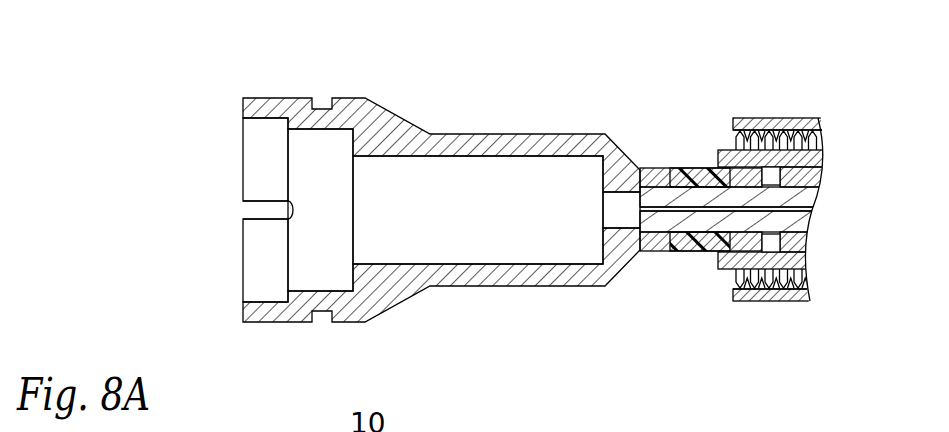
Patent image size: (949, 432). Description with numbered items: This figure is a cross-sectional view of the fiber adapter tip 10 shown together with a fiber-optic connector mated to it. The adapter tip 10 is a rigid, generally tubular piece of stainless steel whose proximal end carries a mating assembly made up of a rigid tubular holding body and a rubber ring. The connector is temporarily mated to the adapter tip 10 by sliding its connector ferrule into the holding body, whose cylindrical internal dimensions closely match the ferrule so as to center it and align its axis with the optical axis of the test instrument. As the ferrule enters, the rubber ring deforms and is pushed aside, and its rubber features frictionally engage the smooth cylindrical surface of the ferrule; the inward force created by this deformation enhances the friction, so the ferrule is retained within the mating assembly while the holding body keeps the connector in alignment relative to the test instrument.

The fiber adapter tip 10 is at (460, 78).